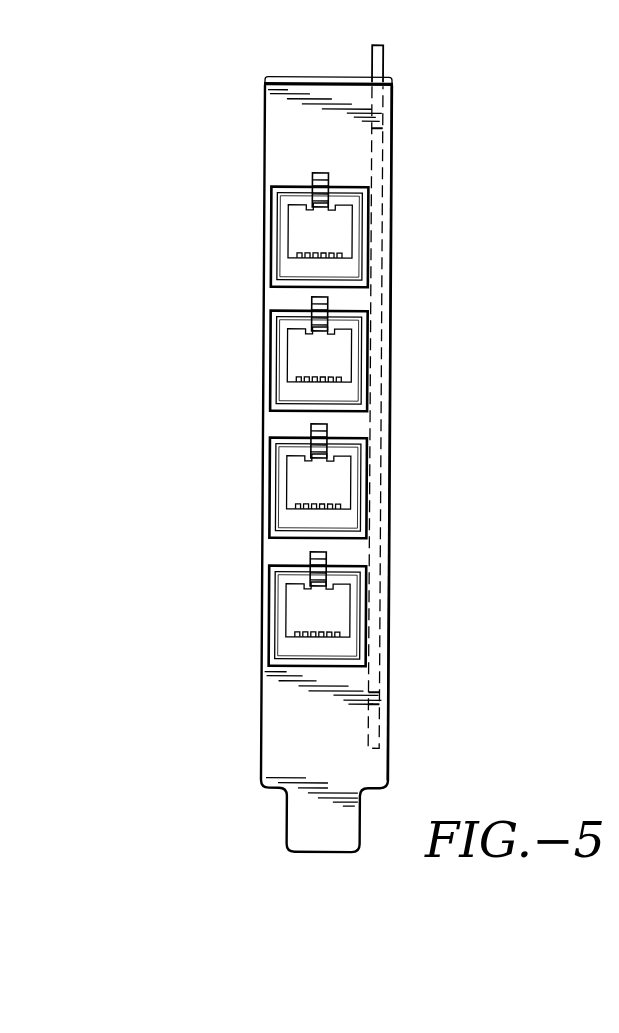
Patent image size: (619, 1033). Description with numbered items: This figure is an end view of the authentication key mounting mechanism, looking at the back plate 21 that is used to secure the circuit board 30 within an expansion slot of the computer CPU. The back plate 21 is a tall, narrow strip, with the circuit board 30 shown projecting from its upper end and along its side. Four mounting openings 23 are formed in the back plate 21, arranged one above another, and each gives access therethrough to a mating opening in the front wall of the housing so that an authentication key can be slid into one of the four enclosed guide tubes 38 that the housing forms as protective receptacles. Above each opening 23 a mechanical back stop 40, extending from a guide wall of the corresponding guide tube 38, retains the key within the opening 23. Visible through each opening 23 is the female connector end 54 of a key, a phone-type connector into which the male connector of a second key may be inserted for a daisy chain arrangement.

The back plate 21 is at (306, 737).
The mounting openings 23 is at (272, 398).
The circuit board 30 is at (380, 56).
The guide tubes 38 is at (292, 80).
The mechanical back stop 40 is at (314, 185).
The female connector end 54 is at (310, 231).